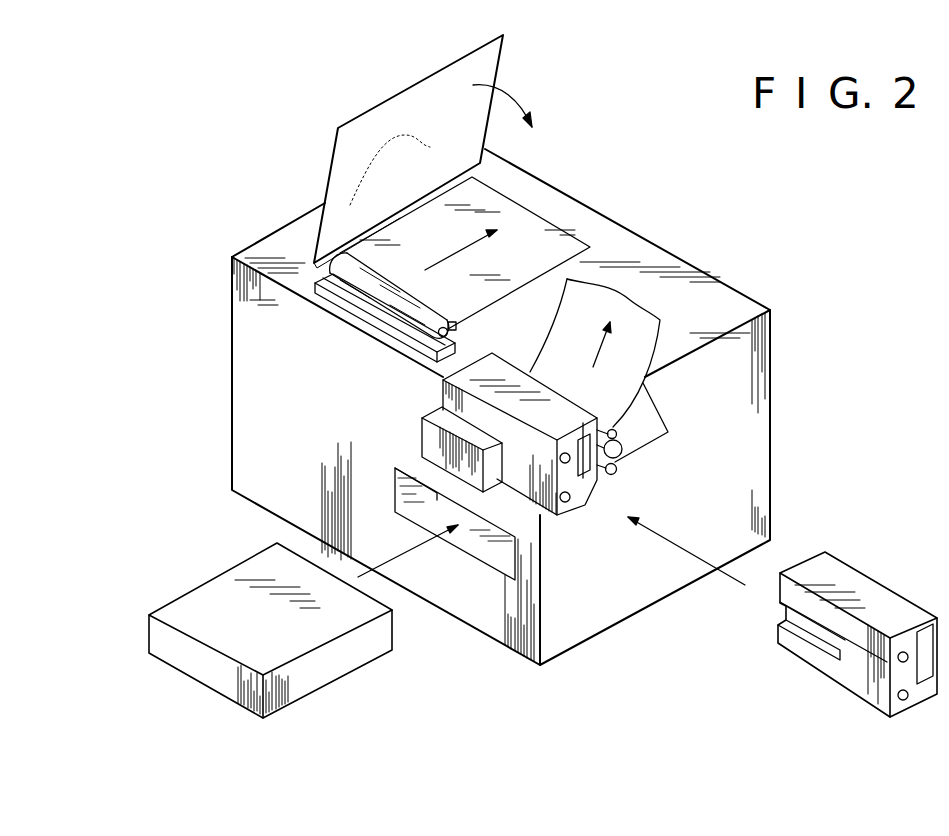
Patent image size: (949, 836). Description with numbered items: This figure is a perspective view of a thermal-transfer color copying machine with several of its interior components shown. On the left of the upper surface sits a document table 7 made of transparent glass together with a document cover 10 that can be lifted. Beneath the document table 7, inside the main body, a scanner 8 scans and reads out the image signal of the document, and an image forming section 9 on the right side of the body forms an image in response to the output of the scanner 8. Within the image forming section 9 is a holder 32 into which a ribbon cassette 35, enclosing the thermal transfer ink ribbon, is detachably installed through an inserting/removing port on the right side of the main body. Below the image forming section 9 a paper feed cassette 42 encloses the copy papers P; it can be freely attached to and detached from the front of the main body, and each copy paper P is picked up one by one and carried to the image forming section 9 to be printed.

The document table 7 is at (537, 232).
The scanner 8 is at (462, 303).
The image forming section 9 is at (655, 466).
The document cover 10 is at (495, 76).
The holder 32 is at (420, 433).
The ribbon cassette 35 is at (880, 593).
The paper feed cassette 42 is at (330, 677).
The copy paper P is at (642, 325).